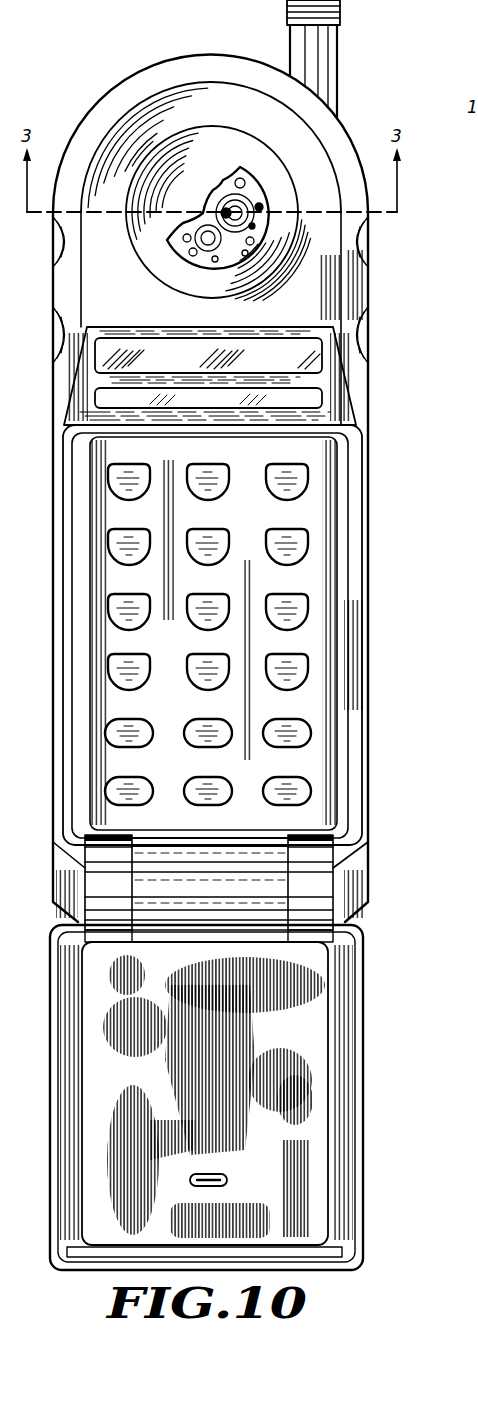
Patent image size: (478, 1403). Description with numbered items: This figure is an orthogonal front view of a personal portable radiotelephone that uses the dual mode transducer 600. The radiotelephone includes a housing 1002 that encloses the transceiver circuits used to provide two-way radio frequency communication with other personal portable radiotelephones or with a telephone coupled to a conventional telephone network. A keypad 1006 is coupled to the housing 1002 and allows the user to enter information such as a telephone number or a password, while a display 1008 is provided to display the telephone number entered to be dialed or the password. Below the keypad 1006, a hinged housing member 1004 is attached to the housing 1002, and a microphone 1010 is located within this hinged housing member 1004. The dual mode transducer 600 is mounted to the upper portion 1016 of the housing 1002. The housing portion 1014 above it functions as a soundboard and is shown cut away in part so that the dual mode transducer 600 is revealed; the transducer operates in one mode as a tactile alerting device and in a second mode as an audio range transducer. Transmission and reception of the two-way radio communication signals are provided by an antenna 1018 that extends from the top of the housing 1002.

The housing 1002 is at (367, 500).
The hinged housing member 1004 is at (320, 963).
The keypad 1006 is at (310, 635).
The display 1008 is at (315, 350).
The microphone 1010 is at (213, 1173).
The housing portion 1014 is at (193, 190).
The upper portion 1016 is at (325, 232).
The antenna 1018 is at (337, 68).
The dual mode transducer 600 is at (263, 193).